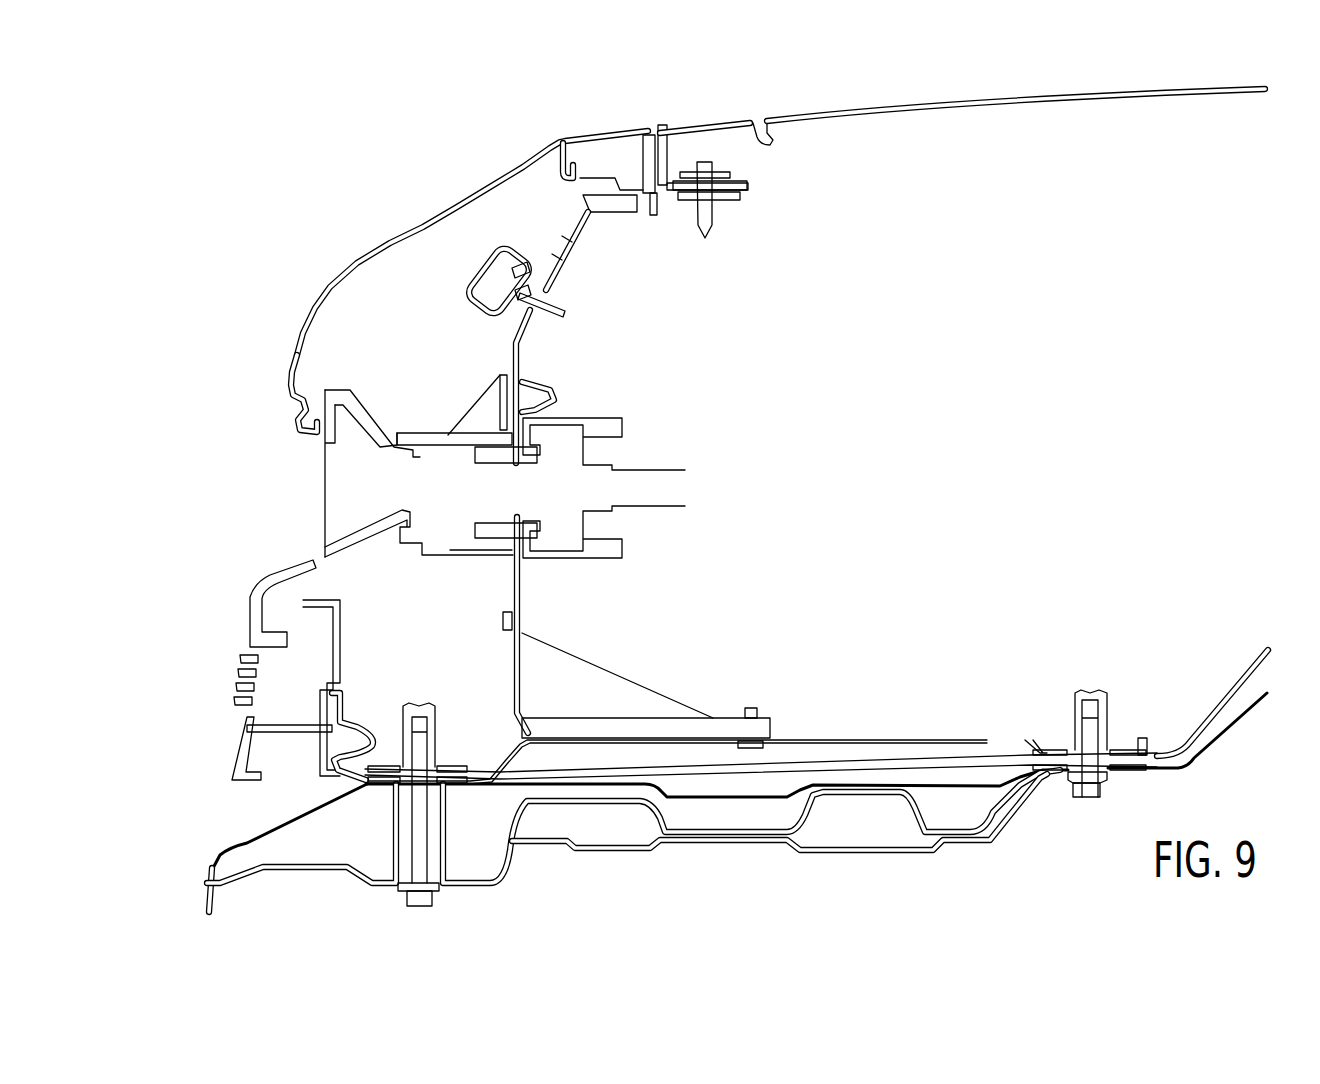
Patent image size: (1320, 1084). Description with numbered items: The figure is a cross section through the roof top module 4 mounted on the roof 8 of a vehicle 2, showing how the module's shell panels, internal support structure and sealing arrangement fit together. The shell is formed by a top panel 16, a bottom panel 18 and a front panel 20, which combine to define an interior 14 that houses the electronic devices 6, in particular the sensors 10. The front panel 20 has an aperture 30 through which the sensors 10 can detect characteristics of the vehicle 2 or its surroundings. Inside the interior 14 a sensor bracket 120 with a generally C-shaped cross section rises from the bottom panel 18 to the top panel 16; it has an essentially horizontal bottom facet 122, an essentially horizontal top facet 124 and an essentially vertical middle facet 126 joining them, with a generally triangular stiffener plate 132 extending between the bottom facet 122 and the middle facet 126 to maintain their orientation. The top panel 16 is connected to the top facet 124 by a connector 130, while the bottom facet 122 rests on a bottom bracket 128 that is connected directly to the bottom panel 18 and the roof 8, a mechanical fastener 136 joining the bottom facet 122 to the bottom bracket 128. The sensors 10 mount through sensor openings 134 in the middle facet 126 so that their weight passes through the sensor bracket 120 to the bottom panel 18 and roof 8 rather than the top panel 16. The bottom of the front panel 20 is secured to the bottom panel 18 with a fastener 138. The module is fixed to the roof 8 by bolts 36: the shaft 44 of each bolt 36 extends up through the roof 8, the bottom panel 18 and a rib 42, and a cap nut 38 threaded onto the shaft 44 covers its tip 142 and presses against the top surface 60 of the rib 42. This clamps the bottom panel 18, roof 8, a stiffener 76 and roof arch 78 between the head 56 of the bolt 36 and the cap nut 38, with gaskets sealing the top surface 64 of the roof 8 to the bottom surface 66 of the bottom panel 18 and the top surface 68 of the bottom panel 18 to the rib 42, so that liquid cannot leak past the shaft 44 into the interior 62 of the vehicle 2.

The vehicle 2 is at (195, 893).
The roof top module 4 is at (390, 190).
The electronic device 6 is at (452, 463).
The roof 8 is at (280, 822).
The sensor 10 is at (452, 463).
The interior 14 is at (1010, 318).
The top panel 16 is at (933, 108).
The bottom panel 18 is at (338, 702).
The front panel 20 is at (308, 333).
The aperture 30 is at (300, 462).
The bolt 36 is at (403, 895).
The cap nut 38 is at (435, 730).
The rib 42 is at (1143, 745).
The shaft 44 is at (420, 783).
The head 56 is at (437, 895).
The top surface 60 is at (1043, 742).
The interior 62 is at (693, 895).
The top surface 64 is at (978, 780).
The bottom surface 66 is at (1197, 742).
The top surface 68 is at (918, 753).
The stiffener 76 is at (495, 853).
The roof arch 78 is at (790, 850).
The sensor bracket 120 is at (565, 265).
The bottom facet 122 is at (600, 723).
The top facet 124 is at (608, 198).
The middle facet 126 is at (530, 330).
The bottom bracket 128 is at (800, 735).
The connector 130 is at (710, 205).
The stiffener plate 132 is at (610, 683).
The sensor opening 134 is at (537, 487).
The mechanical fastener 136 is at (747, 708).
The fastener 138 is at (365, 730).
The tip 142 is at (418, 720).